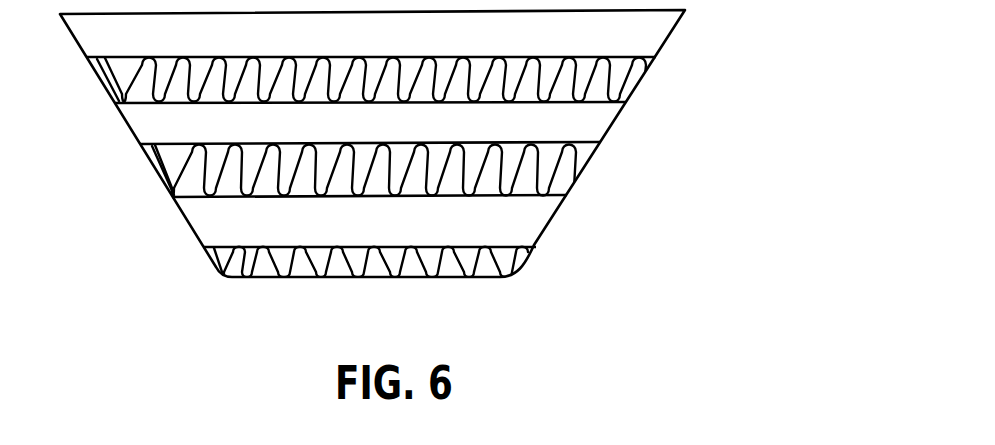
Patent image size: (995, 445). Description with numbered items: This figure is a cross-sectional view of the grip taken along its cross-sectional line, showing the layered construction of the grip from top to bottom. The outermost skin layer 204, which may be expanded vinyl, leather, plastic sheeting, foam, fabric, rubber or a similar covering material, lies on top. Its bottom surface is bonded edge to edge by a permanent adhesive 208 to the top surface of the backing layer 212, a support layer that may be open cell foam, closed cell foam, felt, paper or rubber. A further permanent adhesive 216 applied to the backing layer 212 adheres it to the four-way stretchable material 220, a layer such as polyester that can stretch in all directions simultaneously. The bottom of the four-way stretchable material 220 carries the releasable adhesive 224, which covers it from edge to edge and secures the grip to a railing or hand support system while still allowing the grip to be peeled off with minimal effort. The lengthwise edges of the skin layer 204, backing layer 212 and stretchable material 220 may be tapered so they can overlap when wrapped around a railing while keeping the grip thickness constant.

The skin layer 204 is at (662, 25).
The permanent adhesive 208 is at (640, 72).
The backing layer 212 is at (602, 118).
The permanent adhesive 216 is at (570, 159).
The 4-way stretchable material 220 is at (530, 213).
The releasable adhesive 224 is at (519, 254).